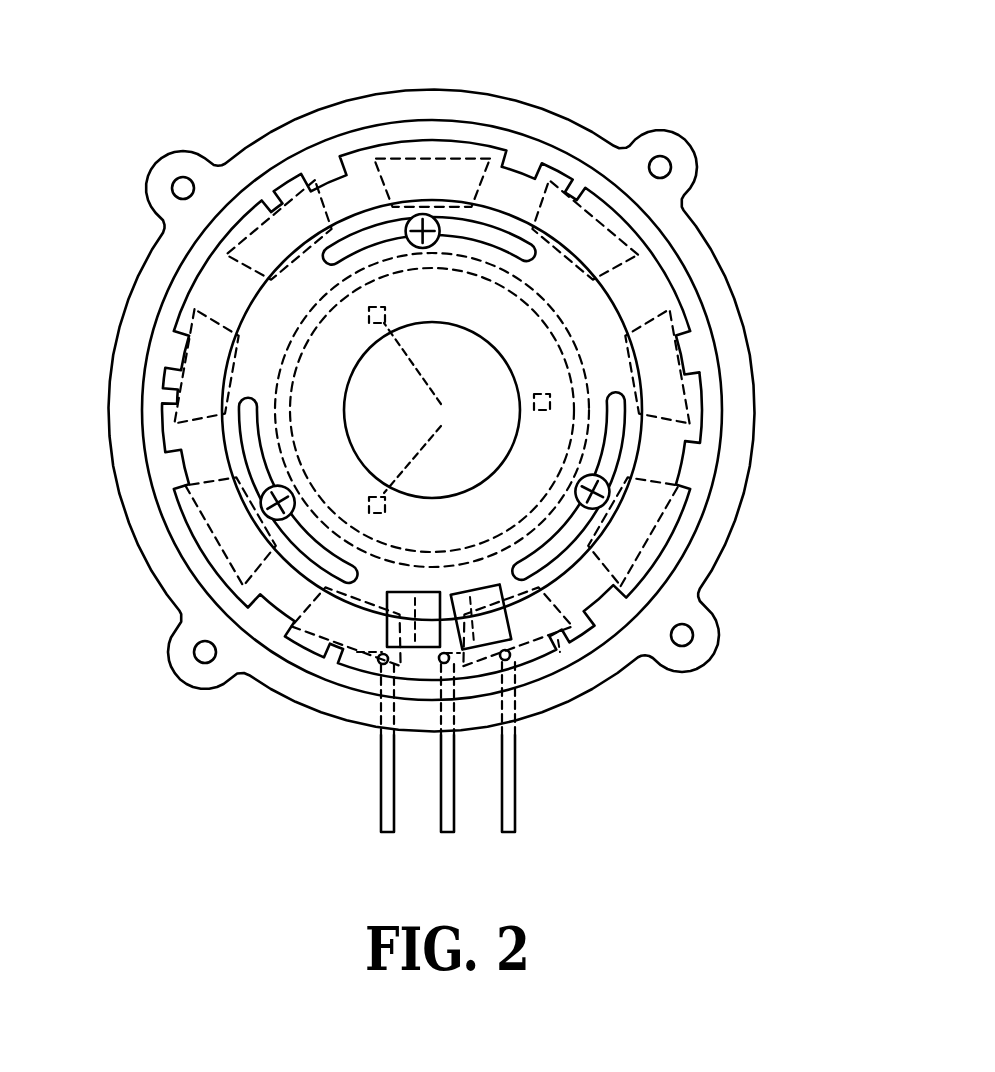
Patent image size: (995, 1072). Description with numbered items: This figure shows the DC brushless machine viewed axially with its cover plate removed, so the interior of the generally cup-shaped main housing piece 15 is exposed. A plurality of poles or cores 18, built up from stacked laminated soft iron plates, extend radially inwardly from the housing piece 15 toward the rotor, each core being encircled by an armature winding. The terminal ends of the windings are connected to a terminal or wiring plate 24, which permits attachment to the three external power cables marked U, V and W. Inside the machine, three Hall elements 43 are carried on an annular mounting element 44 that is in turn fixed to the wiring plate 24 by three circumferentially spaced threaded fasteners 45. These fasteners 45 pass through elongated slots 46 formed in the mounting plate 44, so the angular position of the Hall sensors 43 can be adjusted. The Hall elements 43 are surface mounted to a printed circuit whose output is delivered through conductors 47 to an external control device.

The main housing piece 15 is at (593, 132).
The poles or cores 18 is at (232, 410).
The terminal plate 24 is at (663, 274).
The Hall elements 43 is at (530, 411).
The annular mounting element 44 is at (634, 350).
The threaded fasteners 45 is at (611, 490).
The elongated slots 46 is at (620, 436).
The conductors 47 is at (355, 638).